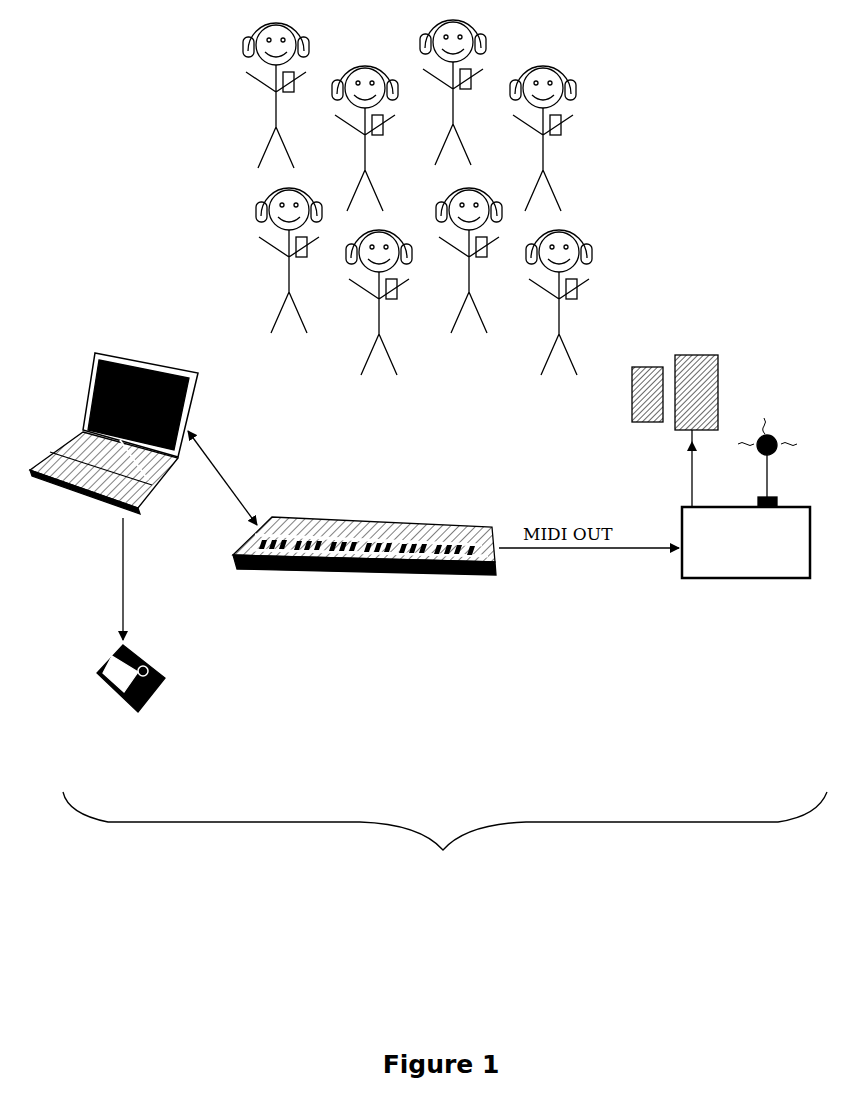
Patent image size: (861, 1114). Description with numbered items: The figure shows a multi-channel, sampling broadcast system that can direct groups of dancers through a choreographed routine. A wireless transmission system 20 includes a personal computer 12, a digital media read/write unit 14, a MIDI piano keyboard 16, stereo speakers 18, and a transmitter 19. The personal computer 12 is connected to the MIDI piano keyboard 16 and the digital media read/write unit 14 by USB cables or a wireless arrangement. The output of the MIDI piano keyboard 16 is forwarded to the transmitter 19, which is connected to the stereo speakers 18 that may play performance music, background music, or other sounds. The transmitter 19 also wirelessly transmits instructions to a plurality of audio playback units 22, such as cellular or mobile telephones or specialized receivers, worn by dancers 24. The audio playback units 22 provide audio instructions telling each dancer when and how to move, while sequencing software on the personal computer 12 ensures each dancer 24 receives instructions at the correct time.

The personal computer 12 is at (114, 433).
The digital media read/write unit 14 is at (151, 678).
The MIDI piano keyboard 16 is at (364, 535).
The stereo speakers 18 is at (690, 450).
The transmitter 19 is at (757, 559).
The wireless transmission system 20 is at (445, 833).
The audio playback units 22 is at (447, 184).
The dancers 24 is at (417, 197).